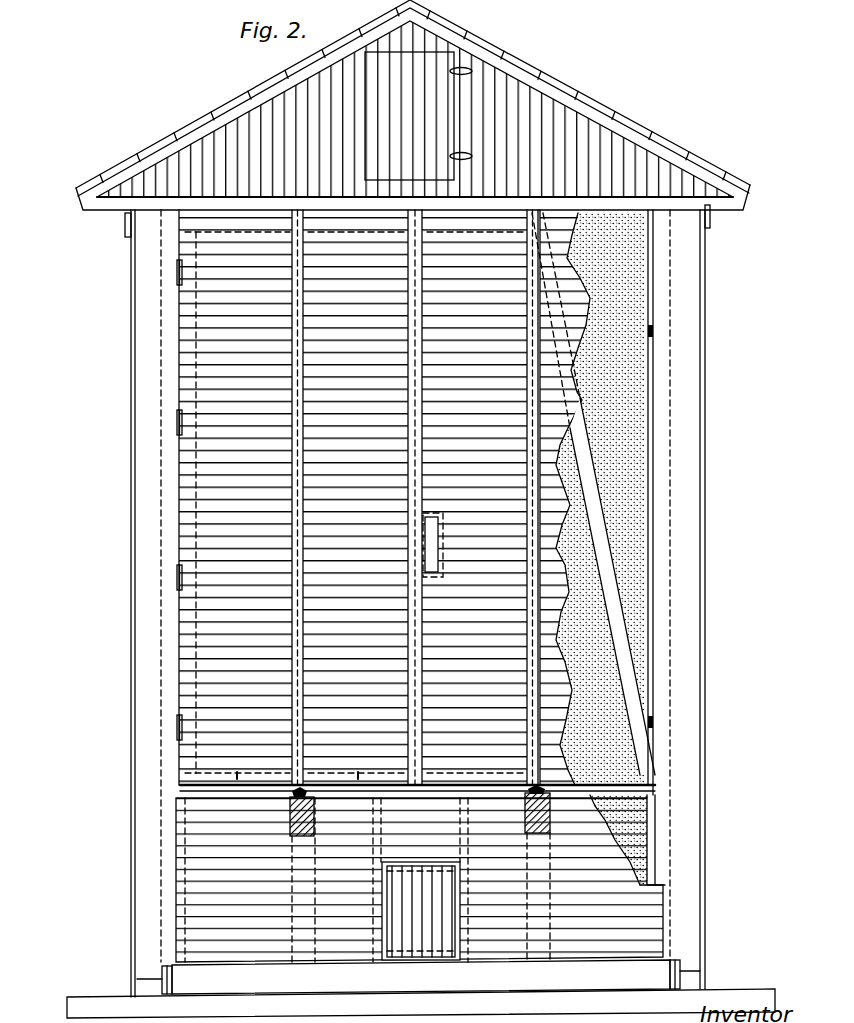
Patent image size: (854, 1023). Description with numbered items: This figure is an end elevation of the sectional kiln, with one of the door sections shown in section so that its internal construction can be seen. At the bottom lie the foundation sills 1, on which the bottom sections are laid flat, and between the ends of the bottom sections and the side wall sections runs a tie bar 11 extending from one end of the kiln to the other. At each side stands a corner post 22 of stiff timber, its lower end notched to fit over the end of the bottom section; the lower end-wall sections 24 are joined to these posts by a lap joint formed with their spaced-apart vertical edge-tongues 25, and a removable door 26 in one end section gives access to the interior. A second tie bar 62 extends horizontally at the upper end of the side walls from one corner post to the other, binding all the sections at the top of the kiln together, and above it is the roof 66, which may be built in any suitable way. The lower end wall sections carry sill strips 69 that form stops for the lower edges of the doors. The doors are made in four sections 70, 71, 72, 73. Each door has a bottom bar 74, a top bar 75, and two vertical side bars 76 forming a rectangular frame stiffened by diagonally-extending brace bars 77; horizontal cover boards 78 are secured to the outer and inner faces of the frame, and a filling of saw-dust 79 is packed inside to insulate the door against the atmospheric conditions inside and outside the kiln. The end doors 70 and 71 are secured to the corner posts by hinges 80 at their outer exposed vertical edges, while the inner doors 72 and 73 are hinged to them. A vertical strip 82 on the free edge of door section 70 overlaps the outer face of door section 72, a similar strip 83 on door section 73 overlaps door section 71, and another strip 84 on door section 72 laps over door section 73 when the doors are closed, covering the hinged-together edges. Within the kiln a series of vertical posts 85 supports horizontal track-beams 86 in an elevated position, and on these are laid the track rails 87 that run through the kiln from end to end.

The foundation sills 1 is at (421, 1003).
The tie bar 11 is at (162, 977).
The corner post 22 is at (701, 576).
The lower end-wall sections 24 is at (420, 880).
The vertical edge-tongues 25 is at (656, 859).
The removable door 26 is at (421, 911).
The tie bar 62 is at (125, 226).
The roof 66 is at (205, 112).
The sill strips 69 is at (237, 770).
The door section 70 is at (235, 497).
The door section 71 is at (565, 497).
The door section 72 is at (355, 497).
The door section 73 is at (474, 497).
The bottom bar 74 is at (602, 778).
The top bar 75 is at (625, 218).
The vertical side bars 76 is at (655, 522).
The brace bars 77 is at (652, 332).
The cover boards 78 is at (593, 494).
The filling of saw-dust 79 is at (640, 476).
The hinges 80 is at (176, 270).
The vertical strip 82 is at (292, 349).
The vertical strip 83 is at (528, 347).
The vertical strip 84 is at (408, 349).
The vertical posts 85 is at (297, 904).
The track-beams 86 is at (292, 816).
The track rails 87 is at (290, 793).